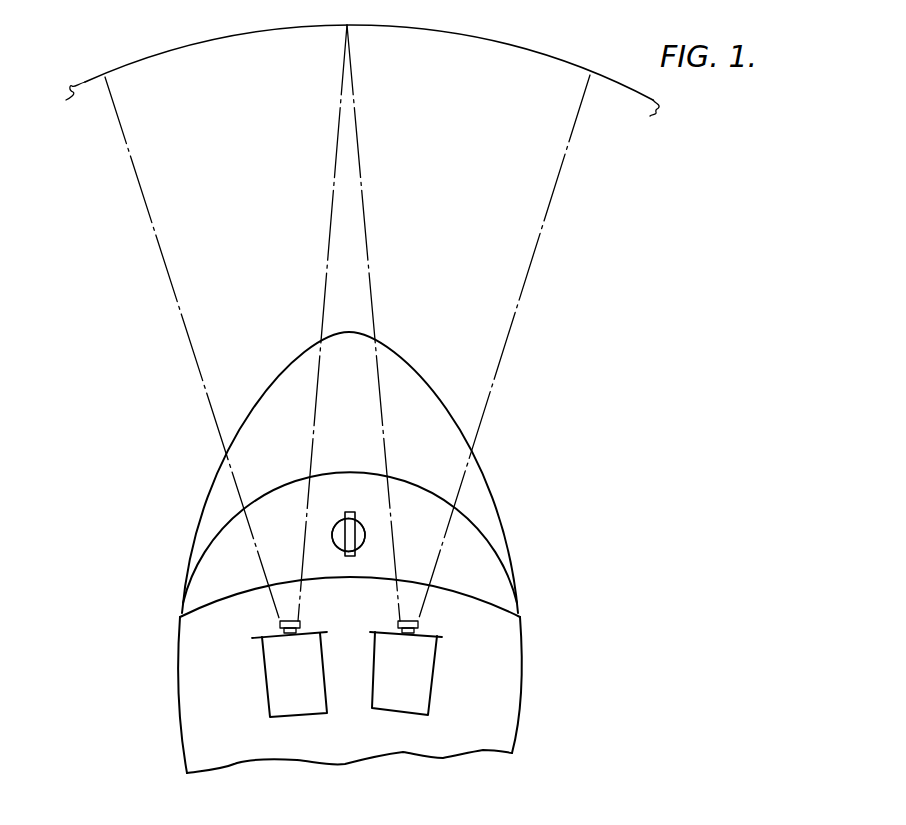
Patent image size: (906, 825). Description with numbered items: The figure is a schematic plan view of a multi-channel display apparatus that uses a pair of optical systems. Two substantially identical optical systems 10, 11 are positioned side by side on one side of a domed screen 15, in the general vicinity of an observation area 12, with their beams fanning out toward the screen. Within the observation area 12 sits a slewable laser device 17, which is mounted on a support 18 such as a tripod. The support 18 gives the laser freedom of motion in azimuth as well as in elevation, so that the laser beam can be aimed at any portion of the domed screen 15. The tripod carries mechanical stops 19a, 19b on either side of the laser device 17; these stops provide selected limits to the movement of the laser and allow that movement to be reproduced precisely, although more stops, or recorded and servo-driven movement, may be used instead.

The optical system 10 is at (275, 680).
The optical system 11 is at (417, 677).
The observation area 12 is at (273, 548).
The domed screen 15 is at (503, 48).
The slewable laser device 17 is at (351, 512).
The support 18 is at (358, 553).
The mechanical stop 19a is at (365, 527).
The mechanical stop 19b is at (333, 527).